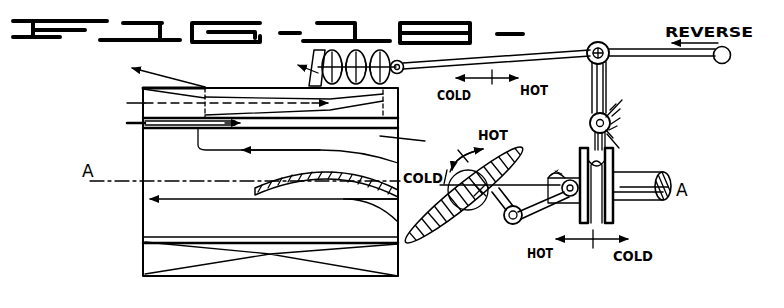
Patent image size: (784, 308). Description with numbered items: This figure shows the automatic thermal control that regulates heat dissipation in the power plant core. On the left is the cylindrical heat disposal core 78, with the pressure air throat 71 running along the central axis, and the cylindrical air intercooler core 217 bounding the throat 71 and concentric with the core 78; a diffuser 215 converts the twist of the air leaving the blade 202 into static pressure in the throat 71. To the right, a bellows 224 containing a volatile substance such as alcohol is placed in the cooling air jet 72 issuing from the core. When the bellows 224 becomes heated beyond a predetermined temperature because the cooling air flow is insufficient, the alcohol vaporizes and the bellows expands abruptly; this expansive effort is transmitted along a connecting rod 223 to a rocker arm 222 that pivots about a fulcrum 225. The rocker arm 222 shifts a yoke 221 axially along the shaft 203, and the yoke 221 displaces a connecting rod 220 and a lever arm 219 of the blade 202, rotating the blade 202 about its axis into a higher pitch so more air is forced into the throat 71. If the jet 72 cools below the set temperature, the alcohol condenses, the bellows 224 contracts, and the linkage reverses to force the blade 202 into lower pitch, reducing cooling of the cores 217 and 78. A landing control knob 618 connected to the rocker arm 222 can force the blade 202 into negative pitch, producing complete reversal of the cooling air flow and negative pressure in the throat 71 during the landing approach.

The pressure air throat 71 is at (276, 232).
The cylindrical core 78 is at (268, 270).
The cylindrical air intercooler core 217 is at (176, 128).
The diffuser 215 is at (316, 178).
The bellows 224 is at (322, 58).
The jet 72 is at (312, 74).
The connecting rod 223 is at (556, 57).
The landing control knob 618 is at (720, 64).
The rocker arm 222 is at (608, 84).
The fulcrum 225 is at (618, 106).
The yoke 221 is at (612, 167).
The shaft 203 is at (644, 201).
The connecting rod 220 is at (549, 202).
The lever arm 219 is at (496, 212).
The air propeller fan blade 202 is at (420, 238).